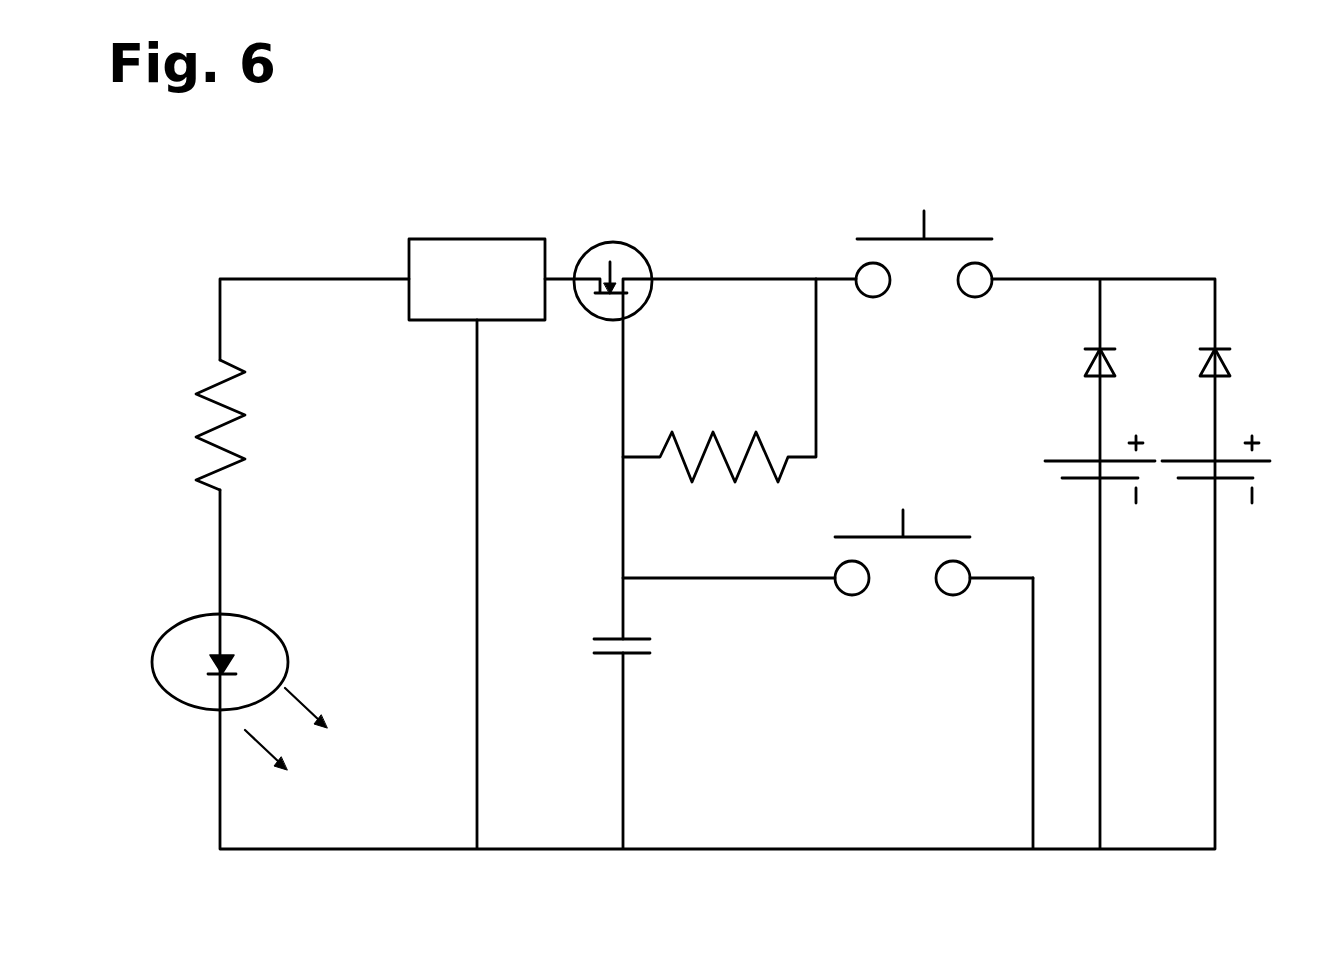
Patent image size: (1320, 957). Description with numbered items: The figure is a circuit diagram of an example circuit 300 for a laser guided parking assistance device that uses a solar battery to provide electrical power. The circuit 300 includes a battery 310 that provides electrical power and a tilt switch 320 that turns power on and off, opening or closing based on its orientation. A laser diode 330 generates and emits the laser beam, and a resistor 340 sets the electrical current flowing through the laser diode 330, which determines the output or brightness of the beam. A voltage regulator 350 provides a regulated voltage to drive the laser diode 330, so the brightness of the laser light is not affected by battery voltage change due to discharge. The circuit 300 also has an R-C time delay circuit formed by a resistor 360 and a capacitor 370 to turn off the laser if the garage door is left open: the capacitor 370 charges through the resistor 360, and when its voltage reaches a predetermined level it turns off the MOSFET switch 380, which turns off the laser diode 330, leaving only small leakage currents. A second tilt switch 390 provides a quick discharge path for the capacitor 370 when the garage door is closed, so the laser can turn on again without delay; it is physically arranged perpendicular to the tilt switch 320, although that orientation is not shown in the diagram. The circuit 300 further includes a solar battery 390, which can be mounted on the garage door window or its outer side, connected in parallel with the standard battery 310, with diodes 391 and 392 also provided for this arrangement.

The circuit 300 is at (1072, 252).
The battery 310 is at (1060, 461).
The tilt switch 320 is at (868, 239).
The laser diode 330 is at (193, 617).
The resistor 340 is at (203, 390).
The voltage regulator 350 is at (441, 239).
The resistor 360 is at (748, 440).
The capacitor 370 is at (598, 637).
The MOSFET switch 380 is at (613, 242).
The second tilt switch 390 is at (847, 537).
The diode 391 is at (1092, 365).
The diode 392 is at (1224, 372).